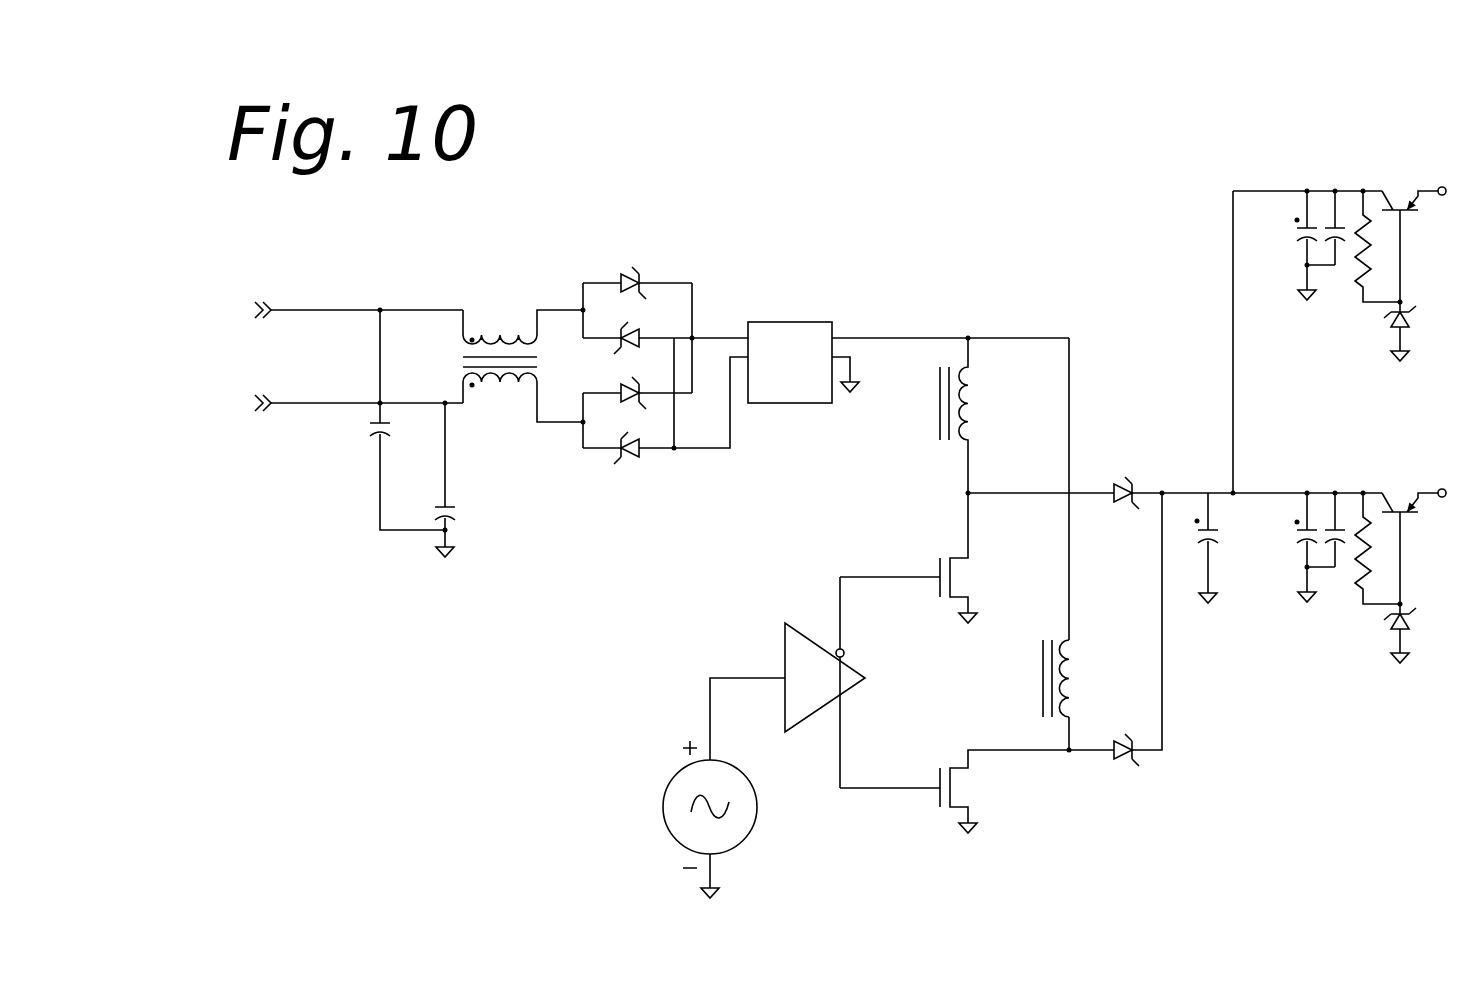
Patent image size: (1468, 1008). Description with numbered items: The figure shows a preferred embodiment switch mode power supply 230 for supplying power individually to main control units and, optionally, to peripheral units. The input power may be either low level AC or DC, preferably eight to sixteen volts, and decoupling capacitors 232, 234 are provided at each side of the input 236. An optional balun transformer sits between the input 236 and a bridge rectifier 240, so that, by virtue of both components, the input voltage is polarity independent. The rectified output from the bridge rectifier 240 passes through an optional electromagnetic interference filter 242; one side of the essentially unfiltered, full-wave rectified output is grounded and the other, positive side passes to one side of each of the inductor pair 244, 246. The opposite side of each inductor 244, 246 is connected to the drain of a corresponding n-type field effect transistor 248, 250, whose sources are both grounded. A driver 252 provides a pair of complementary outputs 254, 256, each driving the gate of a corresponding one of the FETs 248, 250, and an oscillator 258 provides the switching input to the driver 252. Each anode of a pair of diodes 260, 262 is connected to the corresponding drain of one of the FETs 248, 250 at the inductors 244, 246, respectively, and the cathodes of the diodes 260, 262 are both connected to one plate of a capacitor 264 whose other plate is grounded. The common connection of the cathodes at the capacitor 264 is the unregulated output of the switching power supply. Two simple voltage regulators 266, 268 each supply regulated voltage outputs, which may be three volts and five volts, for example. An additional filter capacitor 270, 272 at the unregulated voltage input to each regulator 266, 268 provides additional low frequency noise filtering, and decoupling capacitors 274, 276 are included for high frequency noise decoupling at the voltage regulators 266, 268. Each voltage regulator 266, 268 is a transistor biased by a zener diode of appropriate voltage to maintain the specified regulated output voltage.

The switch mode power supply 230 is at (608, 605).
The decoupling capacitor 232 is at (377, 433).
The decoupling capacitor 234 is at (457, 503).
The input 236 is at (207, 367).
The bridge rectifier 240 is at (602, 452).
The electromagnetic interference (EMI) filter 242 is at (795, 405).
The inductor 244 is at (972, 380).
The inductor 246 is at (1067, 653).
The field effect transistor 248 is at (950, 578).
The field effect transistor 250 is at (950, 790).
The driver 252 is at (785, 648).
The complementary output 254 is at (840, 603).
The complementary output 256 is at (840, 754).
The oscillator 258 is at (757, 817).
The diode 260 is at (1122, 480).
The diode 262 is at (1122, 737).
The capacitor 264 is at (1200, 523).
The voltage regulator 266 is at (1350, 279).
The voltage regulator 268 is at (1350, 582).
The filter capacitor 270 is at (1302, 222).
The filter capacitor 272 is at (1302, 524).
The decoupling capacitor 274 is at (1340, 222).
The decoupling capacitor 276 is at (1340, 524).